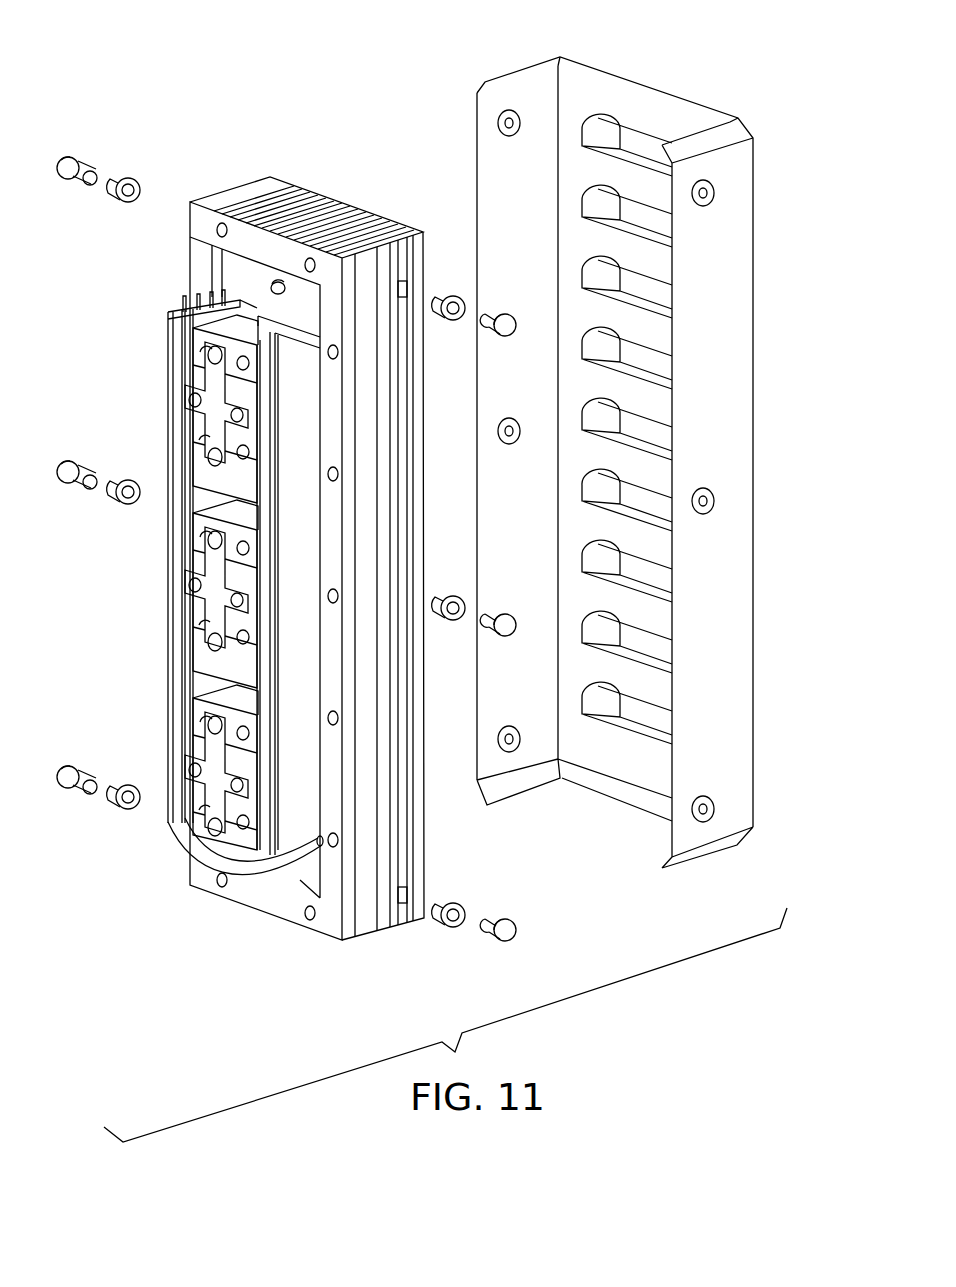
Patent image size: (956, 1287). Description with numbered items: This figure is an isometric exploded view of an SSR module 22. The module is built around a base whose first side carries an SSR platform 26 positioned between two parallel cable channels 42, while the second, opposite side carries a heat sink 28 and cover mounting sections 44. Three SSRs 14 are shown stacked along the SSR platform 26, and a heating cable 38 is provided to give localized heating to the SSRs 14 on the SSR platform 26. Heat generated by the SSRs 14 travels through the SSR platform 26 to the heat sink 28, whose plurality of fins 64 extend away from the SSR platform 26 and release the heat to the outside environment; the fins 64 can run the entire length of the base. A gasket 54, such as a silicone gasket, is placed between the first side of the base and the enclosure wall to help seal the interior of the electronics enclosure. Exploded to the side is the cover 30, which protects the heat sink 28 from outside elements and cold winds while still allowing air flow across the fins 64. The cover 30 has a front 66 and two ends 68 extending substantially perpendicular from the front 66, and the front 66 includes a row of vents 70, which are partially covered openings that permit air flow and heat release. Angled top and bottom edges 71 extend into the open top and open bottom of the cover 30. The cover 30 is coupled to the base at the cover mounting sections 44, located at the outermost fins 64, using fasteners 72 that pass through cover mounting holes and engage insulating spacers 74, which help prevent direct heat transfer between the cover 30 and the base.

The SSR module 22 is at (190, 68).
The SSR 14 is at (200, 438).
The SSR platform 26 is at (248, 272).
The heat sink 28 is at (314, 197).
The cover 30 is at (643, 474).
The heating cable 38 is at (255, 880).
The cable channel 42 is at (178, 285).
The cover mounting section 44 is at (400, 287).
The gasket 54 is at (333, 528).
The fins 64 is at (333, 202).
The front 66 is at (660, 118).
The ends 68 is at (735, 450).
The vents 70 is at (640, 652).
The angled top and bottom edges 71 is at (523, 67).
The fasteners 72 is at (72, 765).
The insulating spacers 74 is at (128, 784).